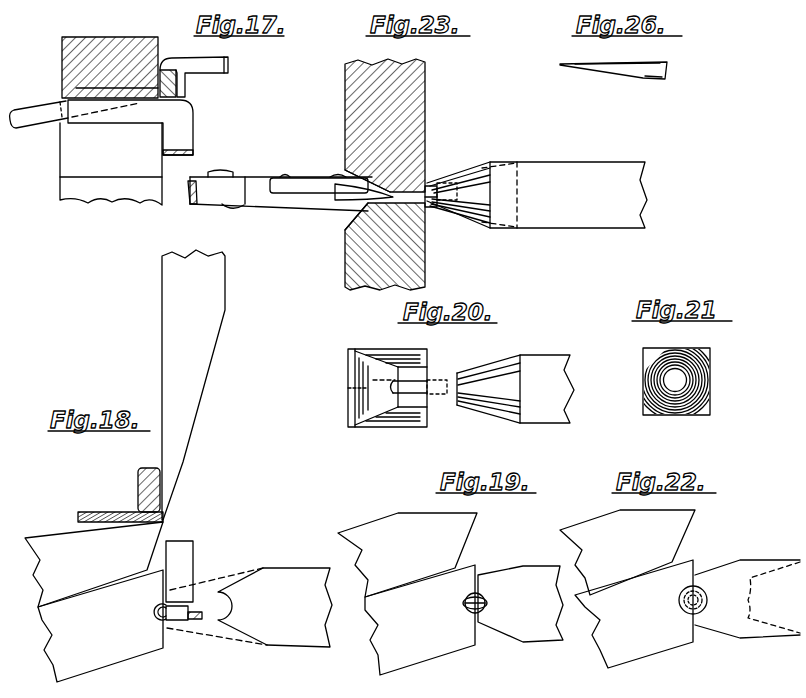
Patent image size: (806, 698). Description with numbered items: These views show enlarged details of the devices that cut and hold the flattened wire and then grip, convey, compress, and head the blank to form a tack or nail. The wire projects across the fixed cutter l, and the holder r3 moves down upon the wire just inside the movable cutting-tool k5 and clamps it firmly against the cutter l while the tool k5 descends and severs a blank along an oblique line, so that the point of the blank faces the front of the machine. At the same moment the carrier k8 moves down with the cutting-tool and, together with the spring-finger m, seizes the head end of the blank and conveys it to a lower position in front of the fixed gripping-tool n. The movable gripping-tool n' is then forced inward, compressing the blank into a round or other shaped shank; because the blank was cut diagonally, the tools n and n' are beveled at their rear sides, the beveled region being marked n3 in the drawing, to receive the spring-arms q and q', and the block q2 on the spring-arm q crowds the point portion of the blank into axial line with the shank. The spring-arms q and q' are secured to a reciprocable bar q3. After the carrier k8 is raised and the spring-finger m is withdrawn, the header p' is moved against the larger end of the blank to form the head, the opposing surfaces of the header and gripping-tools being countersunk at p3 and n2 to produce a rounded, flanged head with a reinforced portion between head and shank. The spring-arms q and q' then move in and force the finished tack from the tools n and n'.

In FIG. 17, the movable cutting-tool k5 is at (114, 30).
In FIG. 18, the movable cutting-tool k5 is at (193, 385).
In FIG. 17, the carrier k8 is at (170, 70).
In FIG. 18, the carrier k8 is at (185, 558).
In FIG. 17, the spring-finger m is at (216, 72).
In FIG. 18, the spring-finger m is at (181, 622).
In FIG. 17, the holder r3 is at (165, 113).
In FIG. 18, the holder r3 is at (138, 484).
In FIG. 17, the fixed cutter l is at (111, 164).
In FIG. 18, the fixed cutter l is at (94, 564).
In FIG. 19, the fixed cutter l is at (407, 555).
In FIG. 22, the fixed cutter l is at (627, 552).
In FIG. 23, the spring-arm q is at (281, 177).
In FIG. 23, the block q2 is at (307, 186).
In FIG. 23, the reciprocable bar q3 is at (206, 194).
In FIG. 23, the spring-arm q' is at (291, 209).
In FIG. 23, the tapered hole n3 is at (345, 168).
In FIG. 20, the tapered hole n3 is at (365, 372).
In FIG. 23, the movable gripping-tool n' is at (396, 125).
In FIG. 18, the movable gripping-tool n' is at (249, 607).
In FIG. 19, the movable gripping-tool n' is at (520, 604).
In FIG. 22, the movable gripping-tool n' is at (747, 599).
In FIG. 20, the movable gripping-tool n' is at (387, 377).
In FIG. 23, the fixed gripping-tool n is at (394, 246).
In FIG. 18, the fixed gripping-tool n is at (100, 626).
In FIG. 19, the fixed gripping-tool n is at (420, 620).
In FIG. 22, the fixed gripping-tool n is at (634, 614).
In FIG. 23, the countersink p3 is at (437, 182).
In FIG. 23, the header p' is at (537, 180).
In FIG. 20, the header p' is at (515, 375).
In FIG. 21, the header p' is at (686, 380).
In FIG. 18, the countersink n2 is at (156, 608).
In FIG. 19, the countersink n2 is at (484, 598).
In FIG. 20, the countersink n2 is at (430, 378).